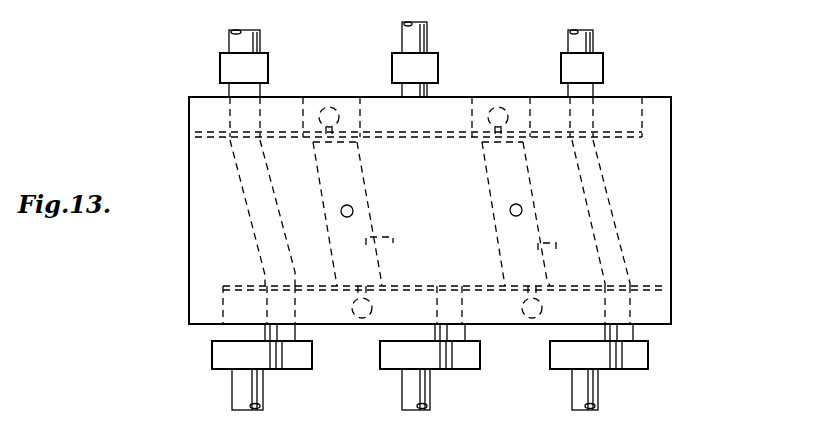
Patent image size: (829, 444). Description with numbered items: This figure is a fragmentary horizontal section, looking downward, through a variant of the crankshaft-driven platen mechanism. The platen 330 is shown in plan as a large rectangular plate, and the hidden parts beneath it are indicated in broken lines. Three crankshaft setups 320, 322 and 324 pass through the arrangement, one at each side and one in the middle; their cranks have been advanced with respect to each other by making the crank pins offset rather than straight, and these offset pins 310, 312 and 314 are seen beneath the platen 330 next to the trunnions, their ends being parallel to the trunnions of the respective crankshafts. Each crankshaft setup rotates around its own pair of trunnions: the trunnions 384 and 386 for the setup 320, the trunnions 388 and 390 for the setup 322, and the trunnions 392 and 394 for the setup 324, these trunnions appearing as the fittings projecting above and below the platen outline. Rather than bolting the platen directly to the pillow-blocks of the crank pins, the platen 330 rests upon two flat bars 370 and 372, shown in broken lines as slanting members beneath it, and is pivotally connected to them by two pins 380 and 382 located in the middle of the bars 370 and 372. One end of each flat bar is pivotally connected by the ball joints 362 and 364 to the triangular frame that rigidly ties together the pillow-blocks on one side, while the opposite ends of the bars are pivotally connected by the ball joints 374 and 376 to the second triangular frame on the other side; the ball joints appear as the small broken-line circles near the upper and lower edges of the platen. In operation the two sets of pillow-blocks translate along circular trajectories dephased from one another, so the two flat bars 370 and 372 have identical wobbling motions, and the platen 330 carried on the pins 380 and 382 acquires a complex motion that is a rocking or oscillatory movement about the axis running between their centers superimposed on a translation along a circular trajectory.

The platen 330 is at (668, 212).
The offset pin 310 is at (290, 332).
The offset pin 312 is at (634, 330).
The offset pin 314 is at (428, 88).
The crankshaft setup 320 is at (258, 402).
The crankshaft setup 322 is at (598, 382).
The crankshaft setup 324 is at (430, 392).
The ball joint 362 is at (360, 319).
The ball joint 364 is at (530, 319).
The flat bar 370 is at (399, 253).
The flat bar 372 is at (570, 258).
The ball joint 374 is at (334, 106).
The ball joint 376 is at (503, 105).
The pin 380 is at (341, 214).
The pin 382 is at (522, 210).
The trunnion 384 is at (236, 387).
The trunnion 386 is at (260, 44).
The trunnion 388 is at (573, 392).
The trunnion 390 is at (593, 42).
The trunnion 392 is at (403, 394).
The trunnion 394 is at (427, 40).